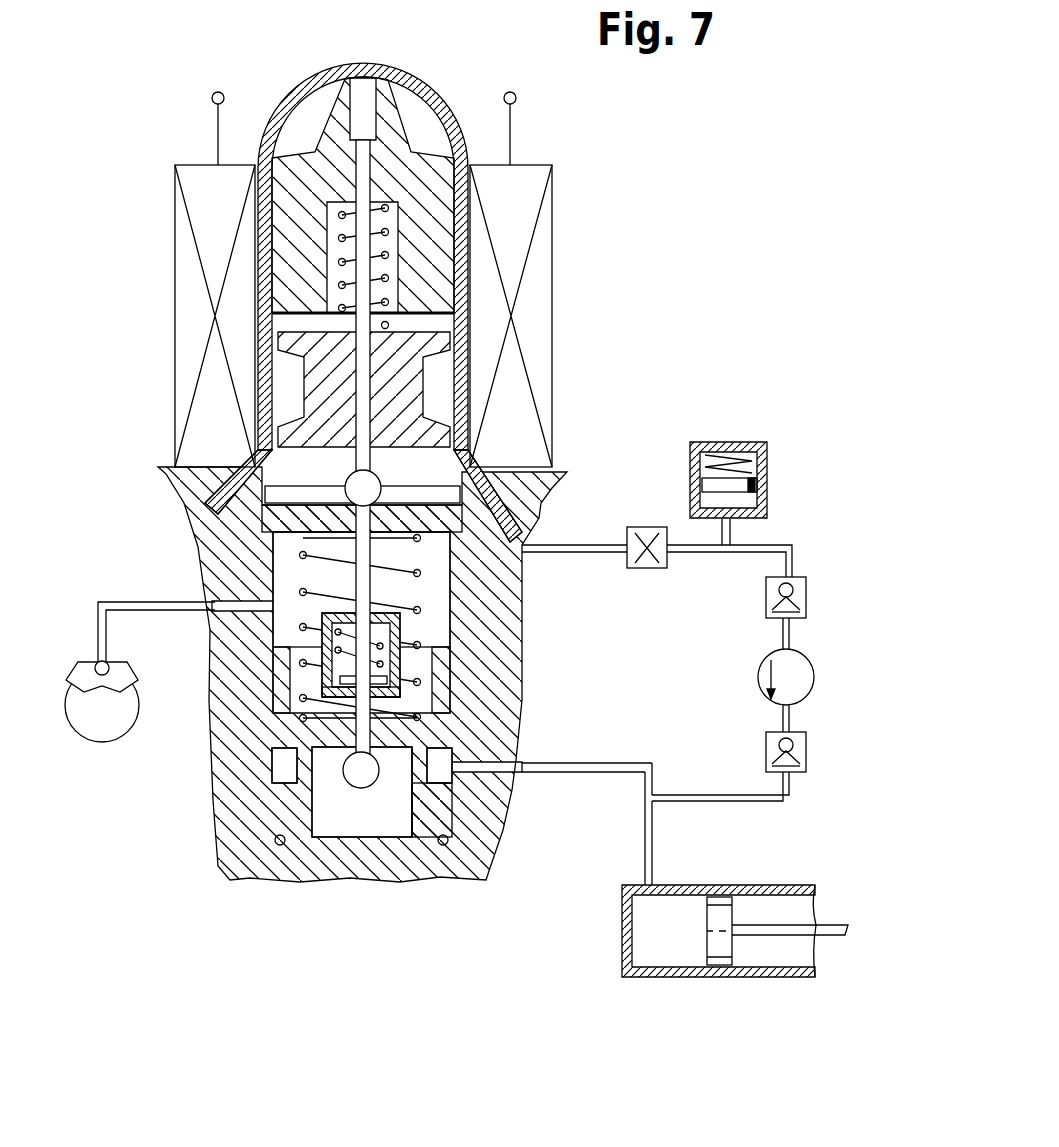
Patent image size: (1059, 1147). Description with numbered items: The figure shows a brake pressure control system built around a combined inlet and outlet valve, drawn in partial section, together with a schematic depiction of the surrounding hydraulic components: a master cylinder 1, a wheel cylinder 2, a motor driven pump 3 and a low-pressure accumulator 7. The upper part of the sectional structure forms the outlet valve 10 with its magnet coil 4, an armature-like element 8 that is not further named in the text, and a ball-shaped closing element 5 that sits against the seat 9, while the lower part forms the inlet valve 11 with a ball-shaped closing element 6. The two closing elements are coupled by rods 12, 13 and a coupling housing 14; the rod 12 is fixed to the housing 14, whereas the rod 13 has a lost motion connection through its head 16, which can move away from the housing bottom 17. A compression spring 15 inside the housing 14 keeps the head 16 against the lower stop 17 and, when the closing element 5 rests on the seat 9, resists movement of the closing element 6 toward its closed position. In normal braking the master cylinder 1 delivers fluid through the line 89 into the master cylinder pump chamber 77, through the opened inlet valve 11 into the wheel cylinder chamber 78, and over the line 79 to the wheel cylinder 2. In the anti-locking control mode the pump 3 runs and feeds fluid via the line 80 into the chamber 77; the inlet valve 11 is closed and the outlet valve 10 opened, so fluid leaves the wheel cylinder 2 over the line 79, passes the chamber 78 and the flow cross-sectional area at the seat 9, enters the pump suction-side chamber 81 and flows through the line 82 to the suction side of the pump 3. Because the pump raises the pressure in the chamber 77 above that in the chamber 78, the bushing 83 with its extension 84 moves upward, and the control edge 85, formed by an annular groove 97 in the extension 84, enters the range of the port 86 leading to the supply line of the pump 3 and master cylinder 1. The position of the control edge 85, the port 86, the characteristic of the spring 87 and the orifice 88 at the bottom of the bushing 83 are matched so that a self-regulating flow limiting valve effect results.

The master cylinder 1 is at (775, 885).
The wheel cylinder 2 is at (92, 662).
The motor driven pump 3 is at (814, 683).
The magnet coil 4 is at (543, 223).
The closing element 5 is at (400, 472).
The closing element 6 is at (359, 775).
The low-pressure accumulator 7 is at (767, 462).
The armature 8 is at (385, 380).
The seat 9 is at (397, 463).
The outlet valve 10 is at (328, 492).
The inlet valve 11 is at (390, 753).
The rod 12 is at (302, 550).
The rod 13 is at (402, 685).
The coupling housing 14 is at (402, 657).
The compression spring 15 is at (385, 636).
The head 16 is at (389, 680).
The housing bottom 17 is at (300, 705).
The master cylinder pump chamber 77 is at (337, 813).
The wheel cylinder chamber 78 is at (433, 597).
The line 79 is at (112, 600).
The line 80 is at (725, 795).
The pump suction-side chamber 81 is at (398, 452).
The line 82 is at (694, 552).
The bushing 83 is at (448, 700).
The extension 84 is at (480, 855).
The control edge 85 is at (452, 800).
The port 86 is at (458, 762).
The spring 87 is at (450, 577).
The orifice 88 is at (400, 753).
The line 89 is at (652, 840).
The annular groove 97 is at (452, 785).